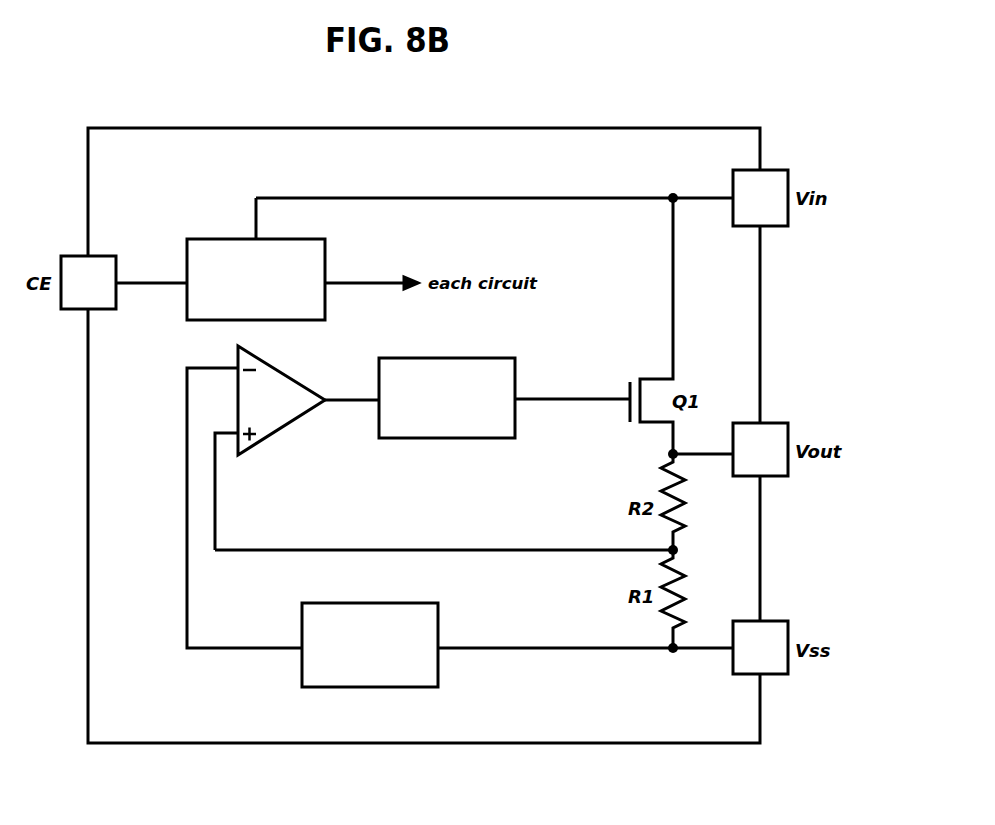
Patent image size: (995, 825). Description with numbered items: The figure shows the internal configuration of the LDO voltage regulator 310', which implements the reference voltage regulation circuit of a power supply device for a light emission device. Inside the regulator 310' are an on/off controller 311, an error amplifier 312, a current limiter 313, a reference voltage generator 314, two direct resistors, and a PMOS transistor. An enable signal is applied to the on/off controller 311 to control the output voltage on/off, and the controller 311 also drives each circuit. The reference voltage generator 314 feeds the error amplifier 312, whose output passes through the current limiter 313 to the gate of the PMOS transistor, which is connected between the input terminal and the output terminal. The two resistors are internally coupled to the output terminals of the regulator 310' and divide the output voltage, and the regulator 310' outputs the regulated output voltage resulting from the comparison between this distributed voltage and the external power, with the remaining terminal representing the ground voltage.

The LDO voltage regulator 310' is at (424, 413).
The on/off controller 311 is at (212, 239).
The error amplifier 312 is at (292, 376).
The current limiter 313 is at (460, 358).
The reference voltage generator 314 is at (438, 615).